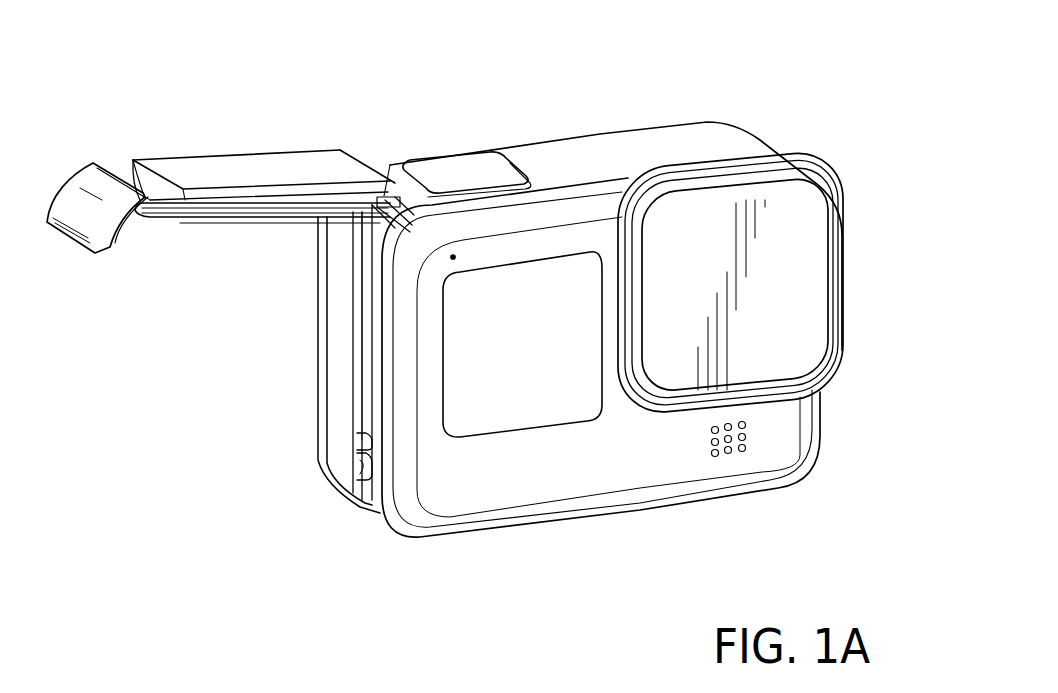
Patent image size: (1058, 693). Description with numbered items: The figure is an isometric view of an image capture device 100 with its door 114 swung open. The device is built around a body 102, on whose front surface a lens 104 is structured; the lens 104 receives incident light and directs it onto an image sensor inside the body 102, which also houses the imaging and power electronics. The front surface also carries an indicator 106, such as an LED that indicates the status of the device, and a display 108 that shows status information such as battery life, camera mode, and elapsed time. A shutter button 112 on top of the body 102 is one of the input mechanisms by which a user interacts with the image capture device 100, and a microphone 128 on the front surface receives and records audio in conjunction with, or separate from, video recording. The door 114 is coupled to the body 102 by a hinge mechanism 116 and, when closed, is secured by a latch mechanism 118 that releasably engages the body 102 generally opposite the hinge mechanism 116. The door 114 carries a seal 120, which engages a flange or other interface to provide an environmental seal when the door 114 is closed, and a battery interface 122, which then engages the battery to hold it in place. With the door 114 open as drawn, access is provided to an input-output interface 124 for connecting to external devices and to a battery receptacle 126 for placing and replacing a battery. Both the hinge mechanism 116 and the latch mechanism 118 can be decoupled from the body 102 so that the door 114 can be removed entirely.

The image capture device 100 is at (805, 56).
The body 102 is at (637, 143).
The lens 104 is at (803, 293).
The indicator 106 is at (453, 257).
The display 108 is at (523, 405).
The shutter button 112 is at (418, 172).
The door 114 is at (272, 163).
The hinge mechanism 116 is at (392, 193).
The latch mechanism 118 is at (73, 198).
The seal 120 is at (163, 205).
The battery interface 122 is at (217, 223).
The input-output interface 124 is at (363, 467).
The battery receptacle 126 is at (367, 245).
The microphone 128 is at (730, 453).